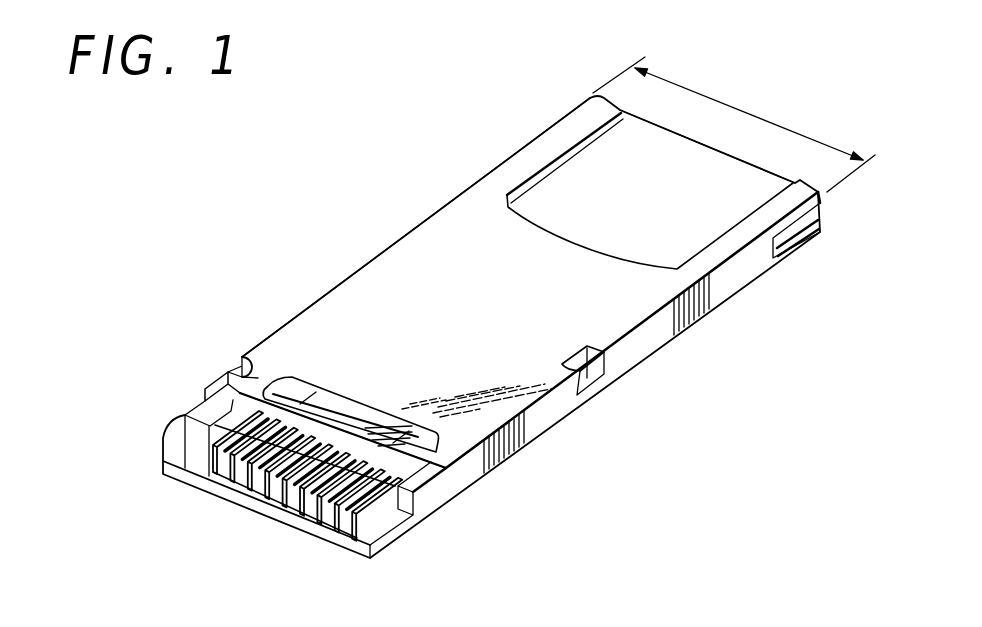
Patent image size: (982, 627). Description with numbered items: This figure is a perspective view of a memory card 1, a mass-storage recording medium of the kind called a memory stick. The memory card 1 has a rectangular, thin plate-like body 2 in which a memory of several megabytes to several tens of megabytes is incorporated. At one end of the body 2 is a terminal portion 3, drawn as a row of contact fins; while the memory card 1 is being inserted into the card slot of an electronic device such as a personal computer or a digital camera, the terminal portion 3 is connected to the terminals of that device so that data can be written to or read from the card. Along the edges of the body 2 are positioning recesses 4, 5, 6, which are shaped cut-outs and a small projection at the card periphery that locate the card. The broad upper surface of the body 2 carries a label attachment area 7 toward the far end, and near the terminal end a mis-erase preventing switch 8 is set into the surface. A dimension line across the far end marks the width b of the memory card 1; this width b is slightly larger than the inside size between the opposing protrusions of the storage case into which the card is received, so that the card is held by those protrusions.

The memory card 1 is at (483, 176).
The body 2 is at (433, 280).
The terminal portion 3 is at (277, 490).
The positioning recess 4 is at (183, 418).
The positioning recess 5 is at (240, 377).
The positioning recess 6 is at (598, 365).
The label attachment area 7 is at (607, 180).
The mis-erase preventing switch 8 is at (353, 410).
The width of the memory card b is at (757, 118).